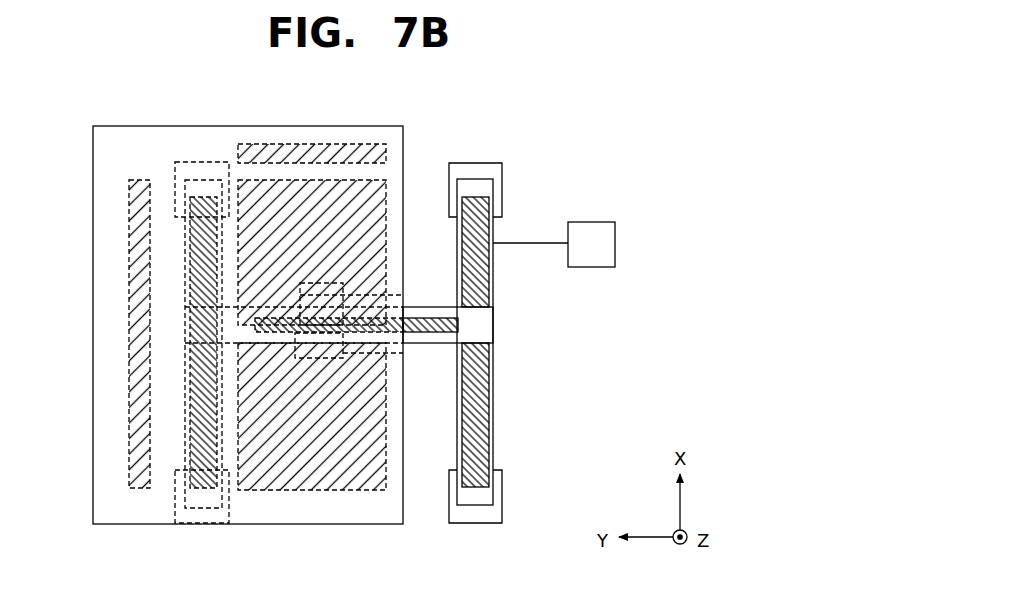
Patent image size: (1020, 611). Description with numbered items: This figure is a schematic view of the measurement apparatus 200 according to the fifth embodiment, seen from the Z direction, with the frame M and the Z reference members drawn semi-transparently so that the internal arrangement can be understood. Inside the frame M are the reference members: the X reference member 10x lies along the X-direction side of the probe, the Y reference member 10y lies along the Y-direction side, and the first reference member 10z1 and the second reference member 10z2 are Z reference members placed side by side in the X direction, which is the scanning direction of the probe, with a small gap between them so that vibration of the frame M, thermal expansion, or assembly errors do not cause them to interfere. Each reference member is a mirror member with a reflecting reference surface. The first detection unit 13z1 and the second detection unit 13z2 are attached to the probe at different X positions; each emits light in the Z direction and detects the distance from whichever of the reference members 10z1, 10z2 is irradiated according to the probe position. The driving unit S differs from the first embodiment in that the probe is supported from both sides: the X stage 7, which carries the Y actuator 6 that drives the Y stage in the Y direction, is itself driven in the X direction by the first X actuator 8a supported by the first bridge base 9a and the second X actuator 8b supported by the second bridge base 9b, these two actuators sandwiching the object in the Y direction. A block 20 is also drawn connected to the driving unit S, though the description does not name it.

The measurement apparatus 200 is at (636, 118).
The frame M is at (70, 125).
The driving unit S is at (500, 132).
The X reference member 10x is at (278, 143).
The Y reference member 10y is at (129, 385).
The first reference member 10z1 is at (347, 180).
The second reference member 10z2 is at (360, 490).
The first bridge base 9a is at (502, 190).
The second bridge base 9b is at (213, 508).
The first X actuator 8a is at (493, 285).
The second X actuator 8b is at (192, 453).
The X stage 7 is at (493, 332).
The Y actuator 6 is at (436, 318).
The first detection unit 13z1 is at (322, 283).
The second detection unit 13z2 is at (312, 360).
The drive circuit 20 is at (615, 237).